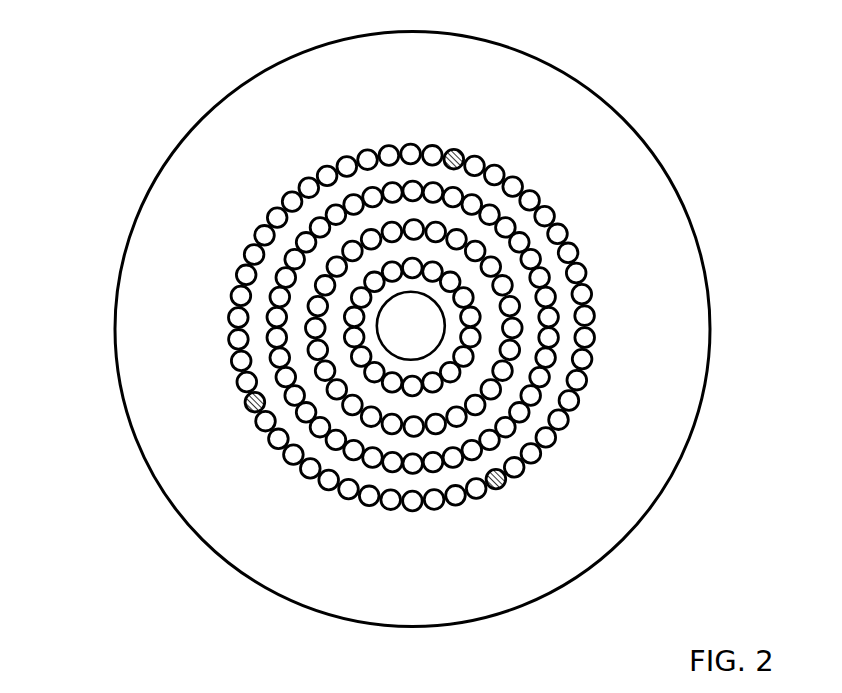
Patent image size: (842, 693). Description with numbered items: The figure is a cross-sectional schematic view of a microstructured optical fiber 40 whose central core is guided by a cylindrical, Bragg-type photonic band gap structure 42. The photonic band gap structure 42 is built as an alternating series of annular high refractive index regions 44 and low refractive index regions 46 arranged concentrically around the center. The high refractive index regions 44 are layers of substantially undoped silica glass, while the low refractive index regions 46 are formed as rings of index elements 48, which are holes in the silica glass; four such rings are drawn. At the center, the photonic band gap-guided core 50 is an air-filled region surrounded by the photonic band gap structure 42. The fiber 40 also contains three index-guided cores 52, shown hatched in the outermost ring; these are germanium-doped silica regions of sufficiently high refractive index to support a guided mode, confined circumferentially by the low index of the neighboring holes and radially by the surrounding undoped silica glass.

The microstructured optical fiber 40 is at (157, 112).
The photonic band gap structure 42 is at (258, 447).
The high refractive index regions 44 is at (368, 437).
The low refractive index regions 46 is at (527, 425).
The index elements 48 is at (585, 316).
The photonic band gap-guided core 50 is at (400, 326).
The index-guided cores 52 is at (458, 152).